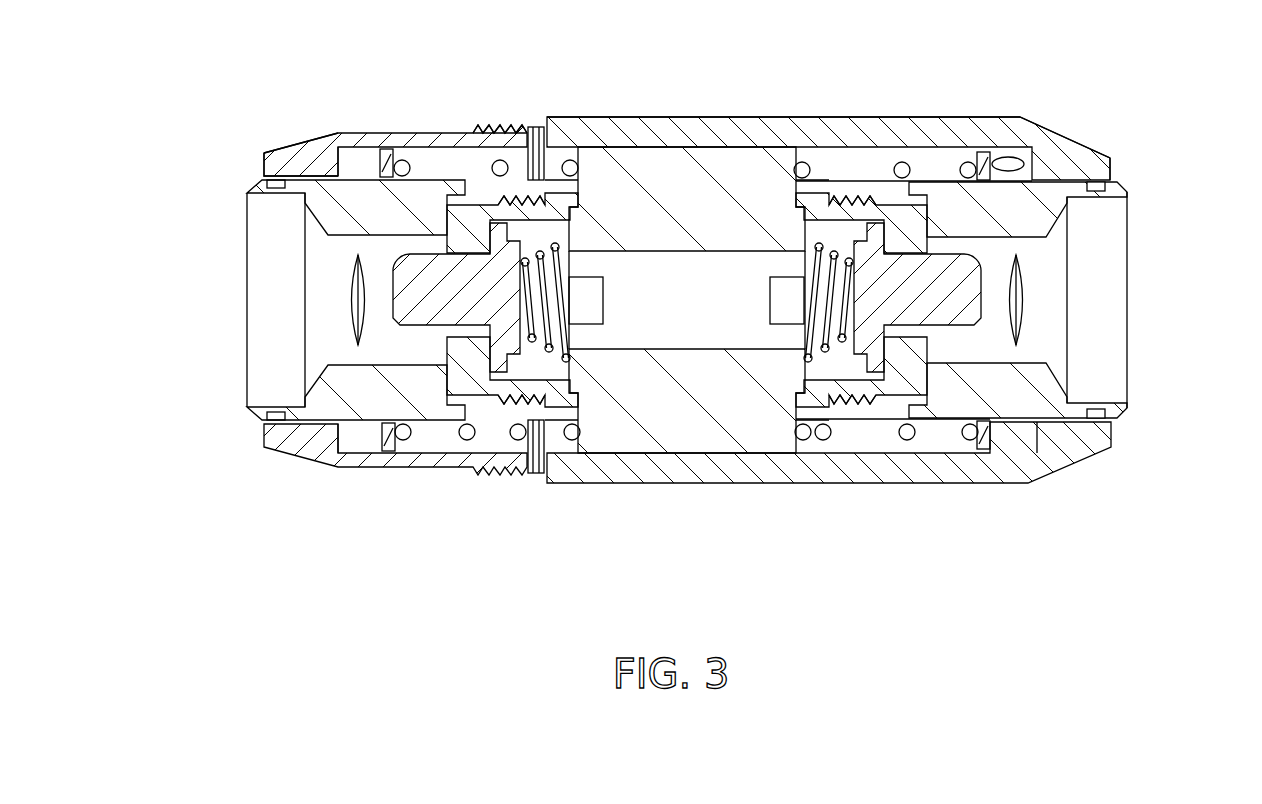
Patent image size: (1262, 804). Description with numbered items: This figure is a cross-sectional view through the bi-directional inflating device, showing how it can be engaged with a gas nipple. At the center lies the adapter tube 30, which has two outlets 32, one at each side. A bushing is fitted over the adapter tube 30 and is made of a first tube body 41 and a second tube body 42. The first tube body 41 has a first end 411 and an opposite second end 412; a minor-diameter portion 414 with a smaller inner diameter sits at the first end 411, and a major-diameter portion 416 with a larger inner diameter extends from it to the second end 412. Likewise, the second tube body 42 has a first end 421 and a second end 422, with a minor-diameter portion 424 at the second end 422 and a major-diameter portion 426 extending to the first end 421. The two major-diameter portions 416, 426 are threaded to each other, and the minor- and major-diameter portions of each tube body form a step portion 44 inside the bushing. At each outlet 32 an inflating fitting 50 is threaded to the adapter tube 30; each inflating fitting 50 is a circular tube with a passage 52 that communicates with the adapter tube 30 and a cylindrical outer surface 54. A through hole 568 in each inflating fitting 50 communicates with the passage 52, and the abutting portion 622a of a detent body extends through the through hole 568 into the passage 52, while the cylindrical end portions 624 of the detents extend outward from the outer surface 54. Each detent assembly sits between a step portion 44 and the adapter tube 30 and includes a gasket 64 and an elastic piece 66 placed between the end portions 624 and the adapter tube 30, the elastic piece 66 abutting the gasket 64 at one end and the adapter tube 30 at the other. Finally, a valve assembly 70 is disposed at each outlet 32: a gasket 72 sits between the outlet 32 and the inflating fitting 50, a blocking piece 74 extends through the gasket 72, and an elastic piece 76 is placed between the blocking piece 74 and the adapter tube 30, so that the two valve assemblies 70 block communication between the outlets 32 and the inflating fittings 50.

The adapter tube 30 is at (668, 185).
The outlet 32 is at (480, 210).
The first tube body 41 is at (828, 117).
The second tube body 42 is at (385, 466).
The step portion 44 is at (382, 150).
The inflating fitting 50 is at (330, 402).
The passage 52 is at (318, 328).
The outer surface 54 is at (358, 424).
The gasket 64 is at (400, 160).
The elastic piece 66 is at (467, 440).
The valve assembly 70 is at (610, 555).
The gasket 72 is at (473, 380).
The blocking piece 74 is at (510, 337).
The elastic piece 76 is at (560, 350).
The first end 411 is at (1112, 172).
The second end 412 is at (470, 128).
The minor-diameter portion 414 is at (1062, 150).
The major-diameter portion 416 is at (748, 130).
The first end 421 is at (538, 128).
The second end 422 is at (262, 165).
The minor-diameter portion 424 is at (302, 138).
The major-diameter portion 426 is at (432, 133).
The through hole 568 is at (352, 270).
The abutting portion 622a is at (355, 290).
The end portion 624 is at (1005, 157).